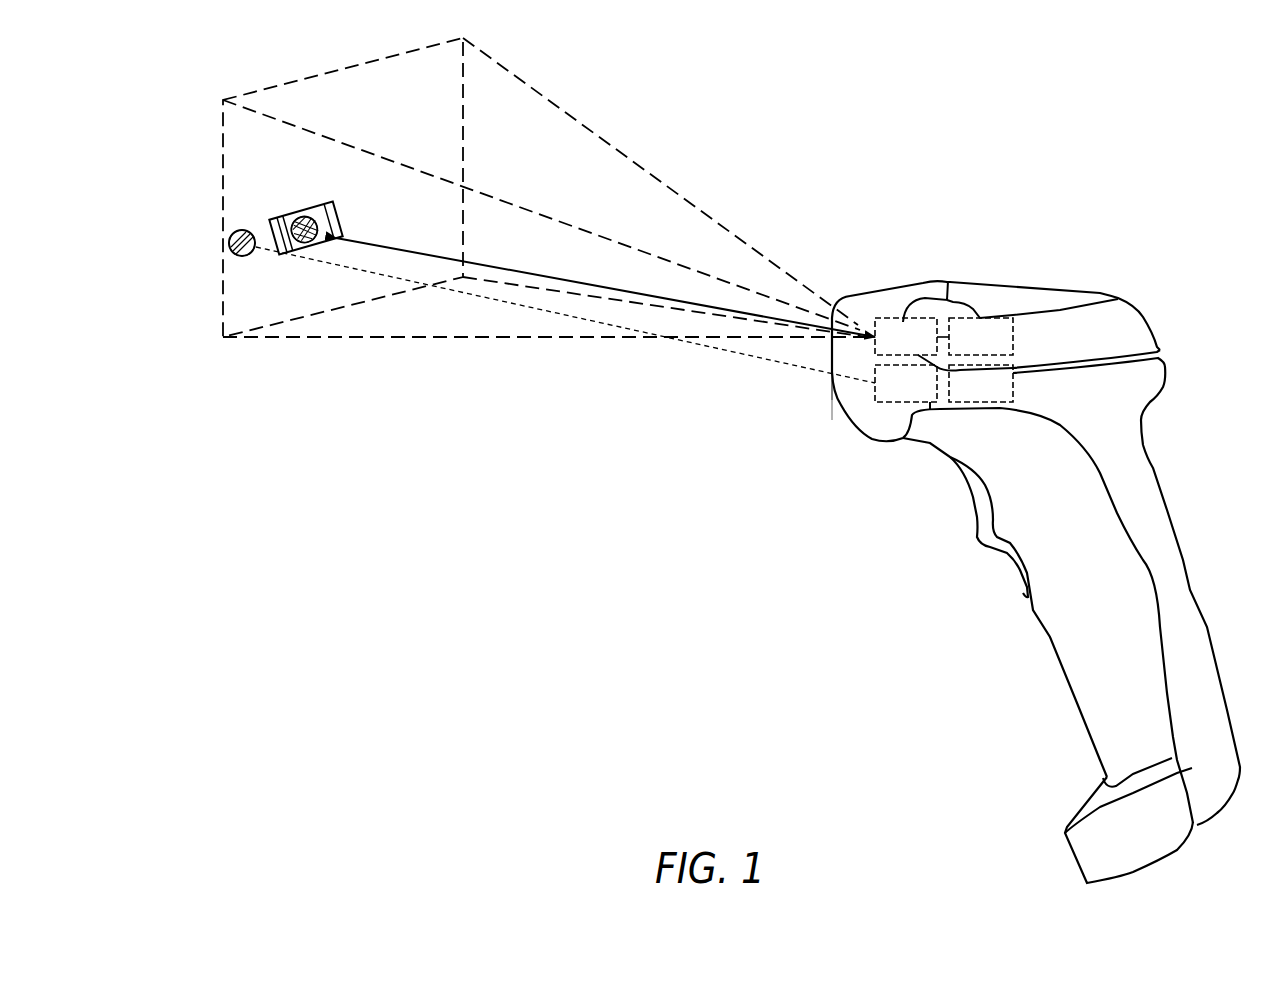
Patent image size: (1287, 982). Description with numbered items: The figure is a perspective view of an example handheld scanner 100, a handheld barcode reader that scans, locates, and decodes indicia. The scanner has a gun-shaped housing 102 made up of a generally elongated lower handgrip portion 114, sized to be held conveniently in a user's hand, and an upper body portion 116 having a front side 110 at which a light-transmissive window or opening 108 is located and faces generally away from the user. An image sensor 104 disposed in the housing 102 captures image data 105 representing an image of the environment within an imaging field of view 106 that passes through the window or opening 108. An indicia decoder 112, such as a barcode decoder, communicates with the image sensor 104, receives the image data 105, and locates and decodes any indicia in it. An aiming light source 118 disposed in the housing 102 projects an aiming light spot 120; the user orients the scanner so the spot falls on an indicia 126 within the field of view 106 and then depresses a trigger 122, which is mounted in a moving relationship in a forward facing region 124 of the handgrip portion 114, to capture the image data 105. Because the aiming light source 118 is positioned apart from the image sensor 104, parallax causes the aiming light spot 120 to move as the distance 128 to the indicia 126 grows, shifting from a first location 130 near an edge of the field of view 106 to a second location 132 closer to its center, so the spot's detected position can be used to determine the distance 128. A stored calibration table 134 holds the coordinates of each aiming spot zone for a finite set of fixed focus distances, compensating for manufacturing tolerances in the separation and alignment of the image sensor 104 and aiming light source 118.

The handheld scanner 100 is at (1170, 168).
The housing 102 is at (868, 292).
The image sensor 104 is at (932, 350).
The image data 105 is at (943, 337).
The imaging field of view 106 is at (543, 98).
The window or opening 108 is at (830, 383).
The front side 110 is at (790, 430).
The indicia decoder 112 is at (1007, 350).
The handgrip portion 114 is at (1187, 572).
The upper body portion 116 is at (1140, 323).
The aiming light source 118 is at (932, 397).
The aiming light spot 120 is at (240, 232).
The trigger 122 is at (978, 527).
The forward facing region 124 is at (948, 612).
The indicia 126 is at (303, 217).
The distance 128 is at (573, 278).
The first location 130 is at (229, 243).
The second location 132 is at (285, 219).
The calibration table 134 is at (1007, 397).